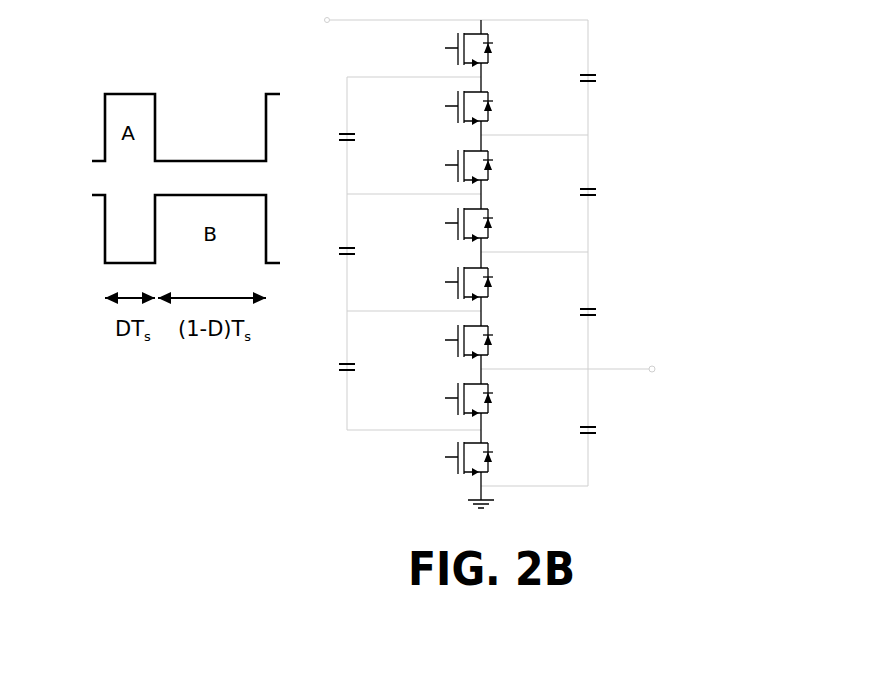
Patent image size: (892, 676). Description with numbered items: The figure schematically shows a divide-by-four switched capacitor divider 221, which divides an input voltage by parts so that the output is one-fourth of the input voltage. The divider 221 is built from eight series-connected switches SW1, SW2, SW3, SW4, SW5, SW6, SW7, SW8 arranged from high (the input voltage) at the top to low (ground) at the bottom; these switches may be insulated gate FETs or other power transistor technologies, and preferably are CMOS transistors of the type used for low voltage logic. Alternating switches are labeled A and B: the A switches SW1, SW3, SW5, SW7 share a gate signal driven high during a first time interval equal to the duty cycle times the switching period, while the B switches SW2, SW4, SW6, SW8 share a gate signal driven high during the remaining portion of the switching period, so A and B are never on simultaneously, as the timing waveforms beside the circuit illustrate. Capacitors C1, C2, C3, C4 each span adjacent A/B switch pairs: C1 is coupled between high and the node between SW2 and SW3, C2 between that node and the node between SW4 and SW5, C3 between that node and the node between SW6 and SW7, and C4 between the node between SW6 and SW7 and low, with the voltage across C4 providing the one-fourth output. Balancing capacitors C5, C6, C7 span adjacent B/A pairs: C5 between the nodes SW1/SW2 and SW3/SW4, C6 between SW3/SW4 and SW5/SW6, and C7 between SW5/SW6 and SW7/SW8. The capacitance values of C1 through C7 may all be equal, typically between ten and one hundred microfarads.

The divide-by-four switched capacitor divider 221 is at (657, 107).
The series switch SW1 is at (438, 50).
The series switch SW2 is at (438, 108).
The series switch SW3 is at (438, 167).
The series switch SW4 is at (438, 225).
The series switch SW5 is at (438, 284).
The series switch SW6 is at (438, 342).
The series switch SW7 is at (438, 400).
The series switch SW8 is at (438, 459).
The capacitor C1 is at (600, 78).
The capacitor C2 is at (600, 192).
The capacitor C3 is at (600, 312).
The capacitor C4 is at (600, 430).
The balancing capacitor C5 is at (335, 137).
The balancing capacitor C6 is at (335, 251).
The balancing capacitor C7 is at (335, 367).